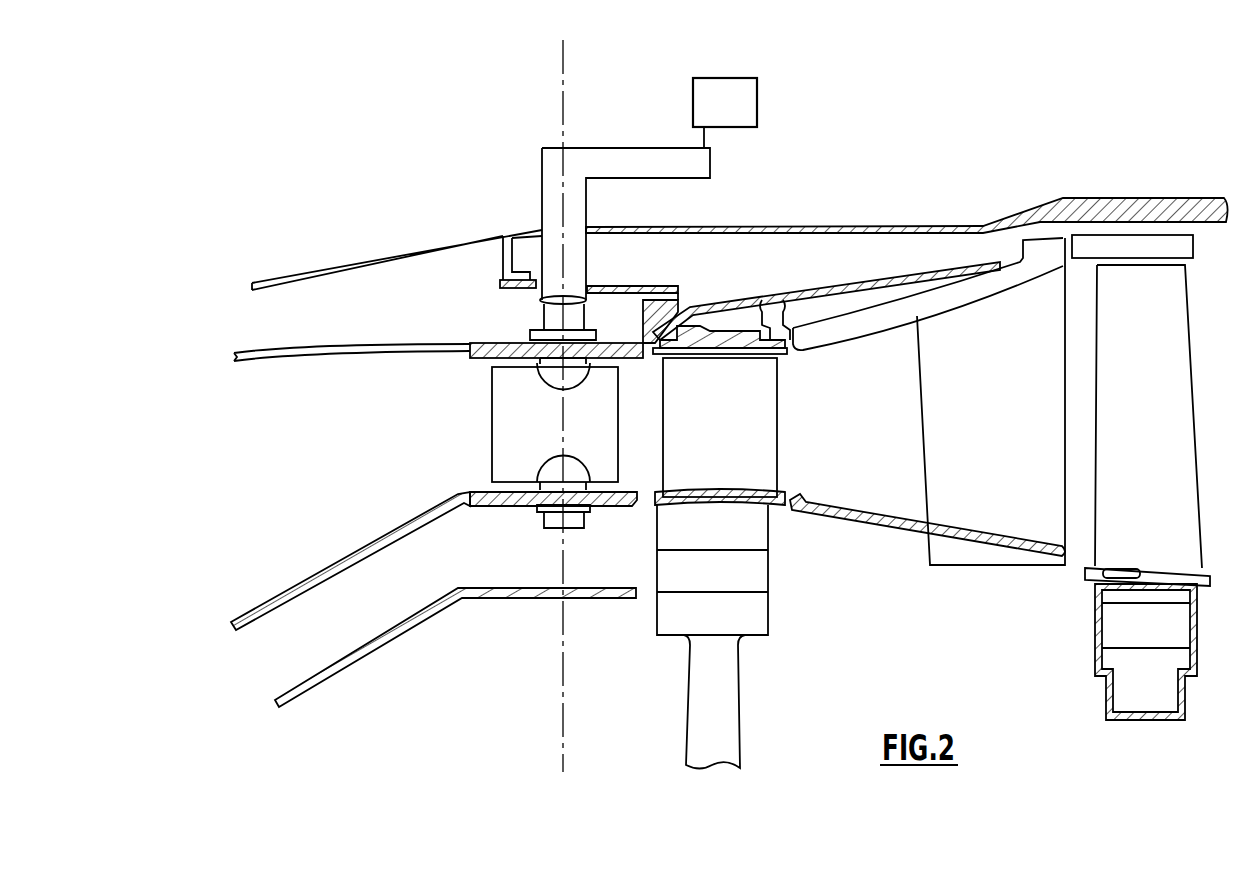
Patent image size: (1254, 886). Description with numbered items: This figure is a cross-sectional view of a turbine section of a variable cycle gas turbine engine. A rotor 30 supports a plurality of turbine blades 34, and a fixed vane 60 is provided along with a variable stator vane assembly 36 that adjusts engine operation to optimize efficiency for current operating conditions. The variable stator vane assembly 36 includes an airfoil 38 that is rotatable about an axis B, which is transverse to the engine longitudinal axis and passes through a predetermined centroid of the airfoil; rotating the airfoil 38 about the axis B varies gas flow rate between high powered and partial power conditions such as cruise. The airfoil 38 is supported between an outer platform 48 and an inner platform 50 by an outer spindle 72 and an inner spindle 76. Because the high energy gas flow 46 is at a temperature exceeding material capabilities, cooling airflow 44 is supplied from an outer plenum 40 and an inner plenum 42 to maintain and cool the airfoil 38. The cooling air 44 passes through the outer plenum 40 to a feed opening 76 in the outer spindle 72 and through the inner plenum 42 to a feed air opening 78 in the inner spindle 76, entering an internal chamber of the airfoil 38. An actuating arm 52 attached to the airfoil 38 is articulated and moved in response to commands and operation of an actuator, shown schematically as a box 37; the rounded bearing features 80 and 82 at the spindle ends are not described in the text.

The axis B is at (564, 68).
The rotor 30 is at (718, 706).
The turbine blades 34 is at (748, 438).
The variable stator vane assembly 36 is at (462, 459).
The controller 37 is at (757, 102).
The airfoil 38 is at (524, 396).
The outer plenum 40 is at (460, 296).
The inner plenum 42 is at (382, 613).
The cooling airflow 44 is at (522, 310).
The high energy gas flow 46 is at (375, 429).
The outer platform 48 is at (600, 348).
The inner platform 50 is at (515, 498).
The actuating arm 52 is at (673, 165).
The fixed vane 60 is at (962, 545).
The outer spindle 72 is at (596, 302).
The inner spindle 76 is at (570, 295).
The feed air opening 78 is at (551, 532).
The upper spherical bearing 80 is at (578, 380).
The lower spherical bearing 82 is at (578, 462).